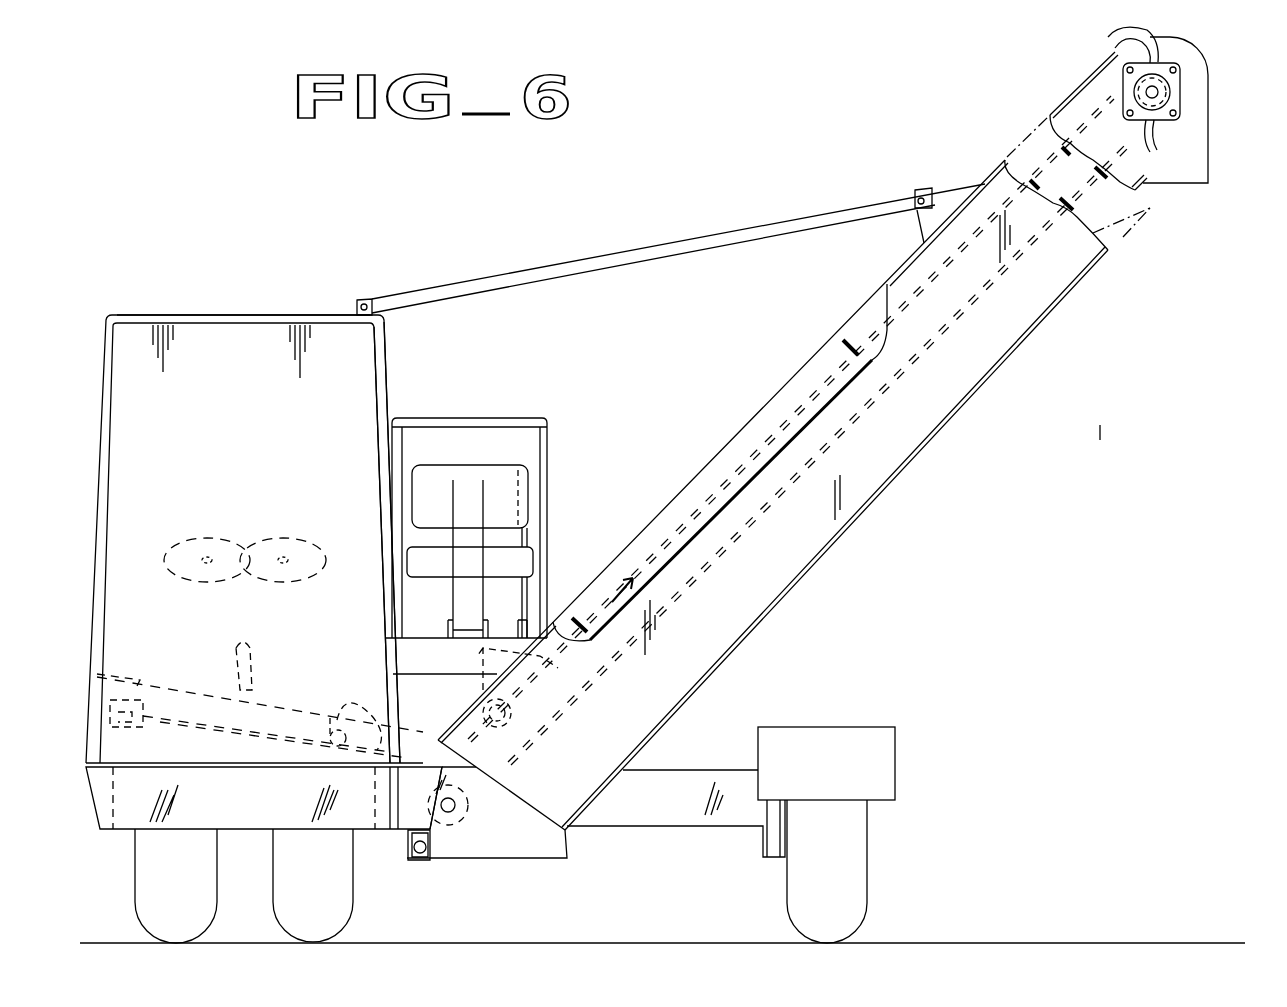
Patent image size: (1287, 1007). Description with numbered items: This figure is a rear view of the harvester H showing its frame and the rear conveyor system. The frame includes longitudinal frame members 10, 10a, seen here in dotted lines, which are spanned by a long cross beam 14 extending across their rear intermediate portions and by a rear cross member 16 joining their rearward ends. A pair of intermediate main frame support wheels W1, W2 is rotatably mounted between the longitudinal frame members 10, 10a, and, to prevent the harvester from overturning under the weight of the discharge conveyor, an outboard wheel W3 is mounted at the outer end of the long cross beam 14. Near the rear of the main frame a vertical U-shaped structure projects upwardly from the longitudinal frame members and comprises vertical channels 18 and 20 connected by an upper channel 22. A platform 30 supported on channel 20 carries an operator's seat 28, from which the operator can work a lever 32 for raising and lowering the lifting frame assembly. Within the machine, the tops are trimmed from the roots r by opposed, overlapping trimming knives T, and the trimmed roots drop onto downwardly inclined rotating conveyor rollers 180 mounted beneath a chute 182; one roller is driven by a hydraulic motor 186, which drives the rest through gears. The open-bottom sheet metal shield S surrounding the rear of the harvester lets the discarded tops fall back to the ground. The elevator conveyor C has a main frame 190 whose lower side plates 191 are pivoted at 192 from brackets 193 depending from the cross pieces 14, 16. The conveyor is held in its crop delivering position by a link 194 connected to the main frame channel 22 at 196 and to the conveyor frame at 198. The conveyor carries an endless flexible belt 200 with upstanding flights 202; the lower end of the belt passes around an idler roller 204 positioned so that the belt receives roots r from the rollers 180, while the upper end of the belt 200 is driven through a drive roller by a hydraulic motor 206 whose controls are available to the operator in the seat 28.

The longitudinal frame member 10 is at (122, 832).
The longitudinal frame member 10a is at (399, 814).
The long cross beam 14 is at (655, 809).
The rear cross member 16 is at (408, 788).
The vertical channel 18 is at (106, 332).
The vertical channel 20 is at (380, 343).
The upper channel 22 is at (205, 318).
The operator's seat 28 is at (522, 557).
The platform 30 is at (421, 637).
The lever 32 is at (523, 531).
The conveyor rollers 180 is at (203, 744).
The chute 182 is at (97, 677).
The hydraulic motor 186 is at (110, 703).
The main frame 190 is at (925, 419).
The lower side plates 191 is at (528, 850).
The pivot 192 is at (424, 846).
The brackets 193 is at (423, 858).
The link 194 is at (697, 238).
The link connection 196 is at (365, 297).
The link connection 198 is at (920, 194).
The belt 200 is at (820, 392).
The flights 202 is at (848, 343).
The idler roller 204 is at (505, 808).
The hydraulic motor 206 is at (1166, 91).
The harvester H is at (790, 119).
The sheet metal shield S is at (377, 383).
The trimming knives T is at (275, 540).
The elevator conveyor C is at (803, 336).
The roots r is at (262, 652).
The main frame support wheel W1 is at (190, 889).
The main frame support wheel W2 is at (329, 889).
The outboard wheel W3 is at (841, 875).